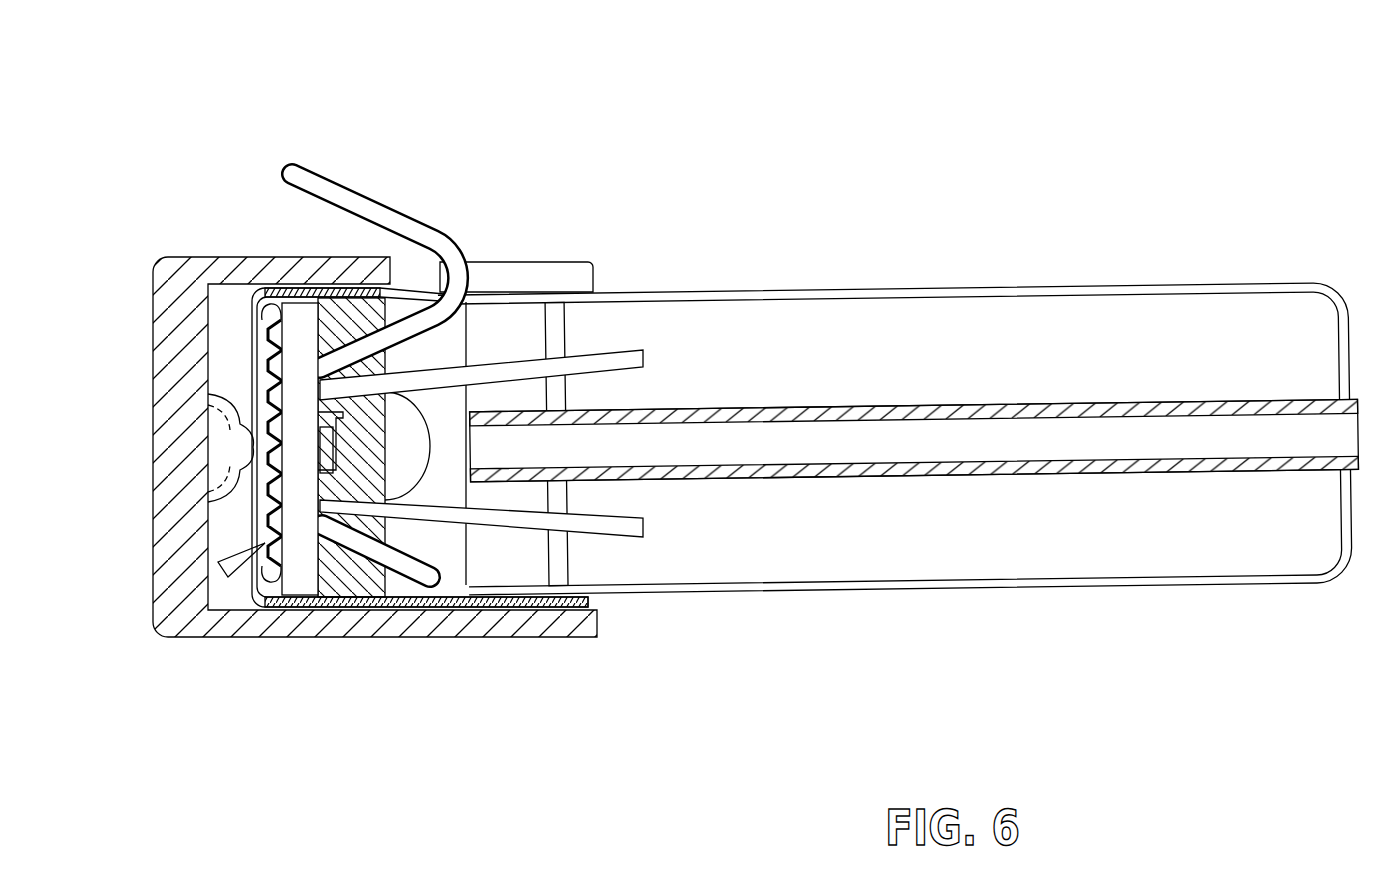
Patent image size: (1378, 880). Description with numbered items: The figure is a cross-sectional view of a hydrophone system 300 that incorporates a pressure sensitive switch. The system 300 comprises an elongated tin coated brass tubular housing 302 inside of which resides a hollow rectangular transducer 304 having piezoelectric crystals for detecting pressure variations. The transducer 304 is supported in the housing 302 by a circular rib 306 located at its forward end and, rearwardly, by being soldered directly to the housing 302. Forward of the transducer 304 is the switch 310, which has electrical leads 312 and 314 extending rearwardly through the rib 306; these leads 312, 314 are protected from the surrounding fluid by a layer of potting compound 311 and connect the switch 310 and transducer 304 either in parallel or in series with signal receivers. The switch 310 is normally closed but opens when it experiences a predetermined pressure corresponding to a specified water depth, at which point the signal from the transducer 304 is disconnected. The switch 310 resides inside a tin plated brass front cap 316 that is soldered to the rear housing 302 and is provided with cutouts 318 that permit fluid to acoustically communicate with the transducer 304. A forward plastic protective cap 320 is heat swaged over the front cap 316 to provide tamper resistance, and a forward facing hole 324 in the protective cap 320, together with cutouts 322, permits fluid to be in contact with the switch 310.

The hydrophone system 300 is at (826, 144).
The tubular housing 302 is at (915, 292).
The transducer 304 is at (860, 405).
The circular rib 306 is at (558, 548).
The switch 310 is at (155, 610).
The potting material 311 is at (355, 572).
The electrical lead 312 is at (628, 358).
The electrical lead 314 is at (632, 527).
The front cap 316 is at (460, 597).
The cutouts 318 is at (405, 487).
The protective cap 320 is at (263, 260).
The cutouts 322 is at (542, 278).
The forward facing hole 324 is at (165, 437).